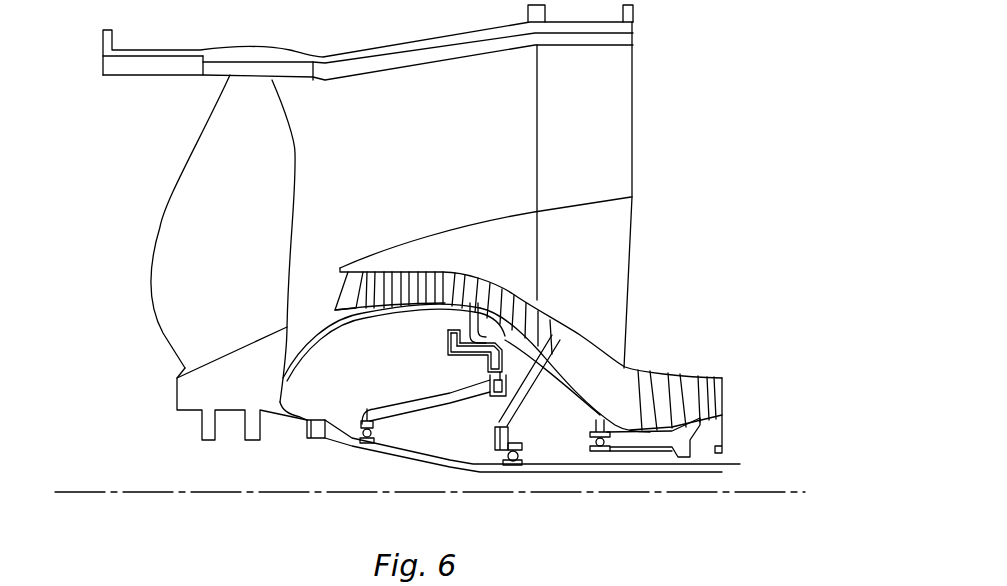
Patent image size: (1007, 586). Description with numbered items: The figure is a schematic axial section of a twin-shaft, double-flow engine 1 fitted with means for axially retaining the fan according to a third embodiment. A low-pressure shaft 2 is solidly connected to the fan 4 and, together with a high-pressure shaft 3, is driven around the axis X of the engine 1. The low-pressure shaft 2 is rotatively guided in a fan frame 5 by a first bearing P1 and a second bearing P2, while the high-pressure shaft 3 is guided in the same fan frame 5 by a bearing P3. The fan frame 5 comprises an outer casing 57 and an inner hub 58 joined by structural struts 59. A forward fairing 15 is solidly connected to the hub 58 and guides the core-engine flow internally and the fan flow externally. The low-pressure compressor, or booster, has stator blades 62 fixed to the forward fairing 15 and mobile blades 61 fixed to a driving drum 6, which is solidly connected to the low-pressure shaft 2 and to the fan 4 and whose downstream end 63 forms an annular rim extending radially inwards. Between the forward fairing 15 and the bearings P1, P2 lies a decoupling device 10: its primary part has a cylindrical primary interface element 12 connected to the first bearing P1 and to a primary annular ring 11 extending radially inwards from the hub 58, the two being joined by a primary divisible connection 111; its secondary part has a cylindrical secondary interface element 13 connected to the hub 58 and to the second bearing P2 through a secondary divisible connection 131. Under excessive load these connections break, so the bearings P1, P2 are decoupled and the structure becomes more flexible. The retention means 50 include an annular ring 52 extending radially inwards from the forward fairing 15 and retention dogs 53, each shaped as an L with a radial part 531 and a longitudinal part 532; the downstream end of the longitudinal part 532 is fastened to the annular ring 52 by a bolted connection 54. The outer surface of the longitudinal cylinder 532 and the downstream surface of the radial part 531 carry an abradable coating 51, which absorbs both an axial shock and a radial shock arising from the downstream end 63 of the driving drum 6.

The twin-shaft engine 1 is at (126, 135).
The low-pressure shaft 2 is at (330, 438).
The high-pressure shaft 3 is at (672, 457).
The fan 4 is at (181, 233).
The fan frame 5 is at (638, 195).
The driving drum 6 is at (298, 355).
The decoupling device 10 is at (523, 434).
The primary annular ring 11 is at (515, 389).
The primary interface element 12 is at (398, 412).
The secondary interface element 13 is at (512, 422).
The forward fairing 15 is at (448, 255).
The retention means 50 is at (529, 305).
The abradable coating 51 is at (470, 312).
The annular ring 52 is at (553, 340).
The retention dogs 53 is at (422, 356).
The bolted connection 54 is at (540, 320).
The outer casing 57 is at (620, 40).
The inner hub 58 is at (656, 282).
The structural struts 59 is at (615, 137).
The mobile blades 61 is at (380, 287).
The stator blades 62 is at (348, 292).
The downstream end 63 is at (487, 317).
The primary divisible connection 111 is at (491, 396).
The secondary divisible connection 131 is at (494, 445).
The radial part 531 is at (448, 337).
The longitudinal part 532 is at (460, 375).
The first bearing P1 is at (366, 445).
The second bearing P2 is at (513, 466).
The bearing 3 P3 is at (602, 452).
The axis X is at (430, 479).